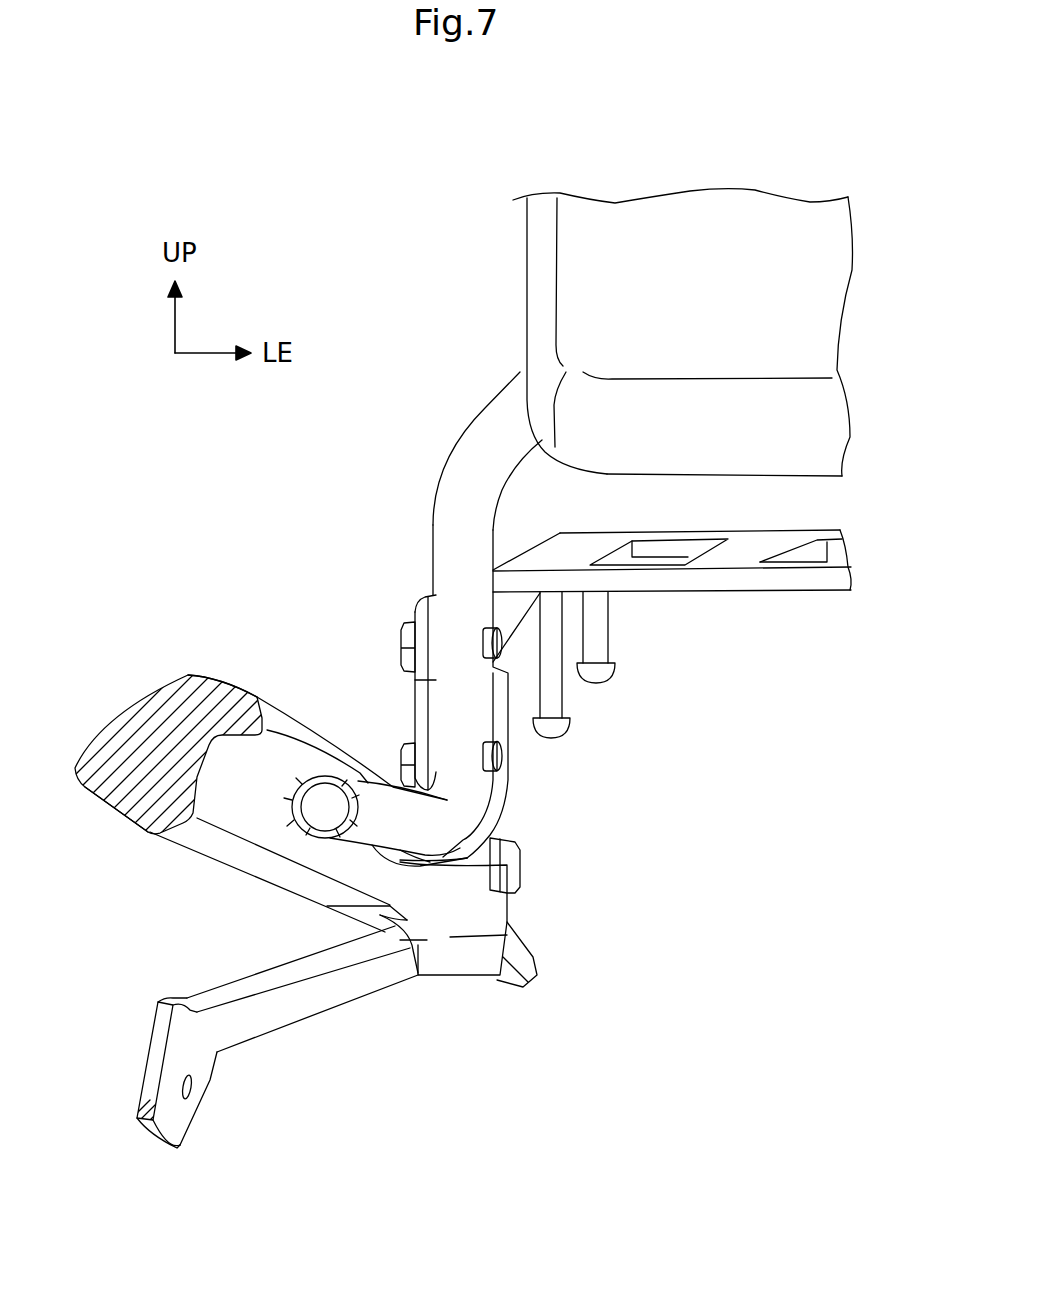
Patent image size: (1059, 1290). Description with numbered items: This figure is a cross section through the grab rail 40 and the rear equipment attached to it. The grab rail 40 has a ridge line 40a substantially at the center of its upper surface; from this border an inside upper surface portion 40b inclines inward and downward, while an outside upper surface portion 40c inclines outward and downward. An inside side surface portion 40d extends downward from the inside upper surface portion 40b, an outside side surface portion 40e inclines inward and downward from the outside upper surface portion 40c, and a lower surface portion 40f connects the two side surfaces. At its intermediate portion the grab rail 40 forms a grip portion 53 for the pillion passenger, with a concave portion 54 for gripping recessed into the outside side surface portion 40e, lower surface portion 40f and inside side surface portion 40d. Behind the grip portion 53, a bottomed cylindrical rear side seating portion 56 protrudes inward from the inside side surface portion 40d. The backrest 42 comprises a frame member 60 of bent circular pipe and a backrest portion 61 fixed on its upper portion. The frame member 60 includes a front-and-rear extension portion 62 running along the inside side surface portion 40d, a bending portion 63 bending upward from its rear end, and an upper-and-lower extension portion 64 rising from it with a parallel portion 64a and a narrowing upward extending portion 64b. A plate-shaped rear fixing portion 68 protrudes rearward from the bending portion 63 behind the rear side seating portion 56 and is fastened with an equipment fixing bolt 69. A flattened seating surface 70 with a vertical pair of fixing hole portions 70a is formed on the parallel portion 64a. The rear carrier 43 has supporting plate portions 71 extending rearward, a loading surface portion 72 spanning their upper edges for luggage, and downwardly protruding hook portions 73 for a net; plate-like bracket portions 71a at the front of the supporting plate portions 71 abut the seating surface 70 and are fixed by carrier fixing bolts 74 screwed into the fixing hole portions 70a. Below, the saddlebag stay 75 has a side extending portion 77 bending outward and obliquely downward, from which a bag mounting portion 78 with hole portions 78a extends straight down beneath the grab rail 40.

The backrest 42 is at (546, 190).
The backrest portion 61 is at (540, 230).
The frame member 60 is at (468, 571).
The upper-and-lower extension portion 64 is at (436, 570).
The parallel portion 64a is at (445, 566).
The upward extending portion 64b is at (492, 415).
The supporting plate portion 71 is at (512, 612).
The plate-like bracket portion 71a is at (418, 720).
The carrier fixing bolt 74 is at (408, 630).
The seating surface 70 is at (420, 682).
The fixing hole portion 70a is at (500, 648).
The loading surface portion 72 is at (739, 580).
The rear carrier 43 is at (672, 608).
The hook portion 73 is at (598, 678).
The front-and-rear extension portion 62 is at (360, 775).
The bending portion 63 is at (505, 800).
The rear fixing portion 68 is at (510, 838).
The equipment fixing bolt 69 is at (522, 876).
The grab rail 40 is at (230, 902).
The ridge line 40a is at (185, 674).
The inside upper surface portion 40b is at (228, 680).
The outside upper surface portion 40c is at (130, 700).
The inside side surface portion 40d is at (283, 720).
The outside side surface portion 40e is at (125, 815).
The grip portion 53 is at (175, 855).
The concave portion for gripping 54 is at (235, 800).
The rear side seating portion 56 is at (470, 966).
The side extending portion 77 is at (322, 1000).
The lower surface portion 40f is at (377, 920).
The bag mounting portion 78 is at (142, 1125).
The hole portion 78a is at (195, 1088).
The saddlebag stay 75 is at (160, 1115).